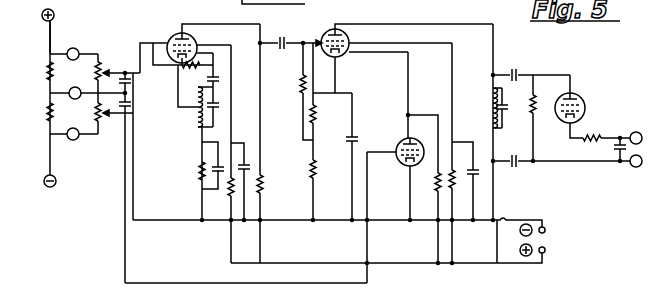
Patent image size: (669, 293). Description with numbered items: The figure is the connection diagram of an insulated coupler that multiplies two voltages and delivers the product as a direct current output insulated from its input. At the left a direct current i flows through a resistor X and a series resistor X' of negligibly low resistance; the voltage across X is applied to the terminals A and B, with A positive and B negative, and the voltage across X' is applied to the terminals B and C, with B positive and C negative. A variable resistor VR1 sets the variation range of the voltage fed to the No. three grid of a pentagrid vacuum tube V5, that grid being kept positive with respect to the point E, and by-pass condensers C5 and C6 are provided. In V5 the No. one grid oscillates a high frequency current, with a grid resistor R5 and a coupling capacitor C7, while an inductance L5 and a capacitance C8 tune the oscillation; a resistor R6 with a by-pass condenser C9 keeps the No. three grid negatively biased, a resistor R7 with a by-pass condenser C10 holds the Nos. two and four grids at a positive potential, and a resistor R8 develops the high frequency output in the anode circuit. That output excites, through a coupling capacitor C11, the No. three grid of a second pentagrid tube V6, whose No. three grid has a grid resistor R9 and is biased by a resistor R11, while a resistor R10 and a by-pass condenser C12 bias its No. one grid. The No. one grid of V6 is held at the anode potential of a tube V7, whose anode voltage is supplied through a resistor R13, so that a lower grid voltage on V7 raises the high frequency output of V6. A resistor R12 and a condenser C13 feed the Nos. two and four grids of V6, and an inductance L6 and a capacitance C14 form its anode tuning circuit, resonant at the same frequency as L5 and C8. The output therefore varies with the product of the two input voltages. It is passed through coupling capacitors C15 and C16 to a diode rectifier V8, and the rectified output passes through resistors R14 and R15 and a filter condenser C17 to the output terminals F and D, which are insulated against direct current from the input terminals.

The direct current i is at (54, 37).
The terminal A is at (74, 54).
The terminal B is at (87, 93).
The terminal C is at (74, 134).
The resistor X is at (55, 71).
The resistor X' is at (56, 112).
The variable resistor VR1 is at (117, 94).
The by-pass condenser C5 is at (133, 83).
The point E is at (132, 101).
The by-pass capacitor C6 is at (136, 186).
The pentagrid vacuum tube V5 is at (211, 41).
The grid resistor R5 is at (191, 72).
The coupling capacitor C7 is at (220, 70).
The inductance L5 is at (197, 116).
The capacitance C8 is at (219, 107).
The resistor R6 is at (200, 162).
The by-pass condenser C9 is at (218, 174).
The resistor R7 is at (233, 191).
The by-pass condenser C10 is at (245, 164).
The resistor R8 is at (260, 179).
The coupling capacitor C11 is at (291, 36).
The pentagrid vacuum tube V6 is at (404, 54).
The grid resistor R9 is at (298, 80).
The resistor R10 is at (326, 101).
The resistor R11 is at (326, 190).
The by-pass condenser C12 is at (364, 156).
The vacuum tube V7 is at (414, 139).
The resistor R13 is at (438, 175).
The resistor R12 is at (451, 173).
The condenser C13 is at (475, 171).
The inductance L6 is at (492, 96).
The capacitance C14 is at (512, 108).
The coupling capacitor C15 is at (515, 70).
The resistor R14 is at (533, 115).
The diode rectifier V8 is at (575, 100).
The resistor R15 is at (584, 137).
The coupling capacitor C16 is at (516, 165).
The filter condenser C17 is at (618, 149).
The output terminal F is at (636, 138).
The output terminal D is at (636, 161).